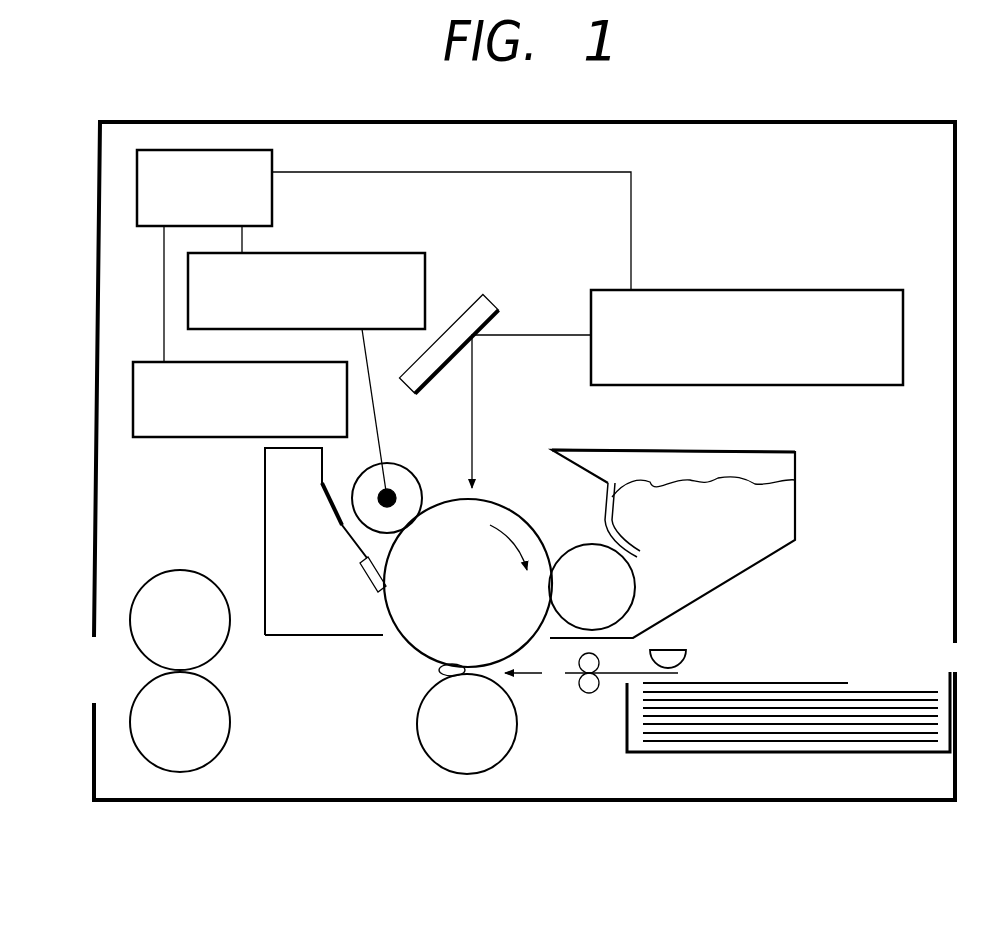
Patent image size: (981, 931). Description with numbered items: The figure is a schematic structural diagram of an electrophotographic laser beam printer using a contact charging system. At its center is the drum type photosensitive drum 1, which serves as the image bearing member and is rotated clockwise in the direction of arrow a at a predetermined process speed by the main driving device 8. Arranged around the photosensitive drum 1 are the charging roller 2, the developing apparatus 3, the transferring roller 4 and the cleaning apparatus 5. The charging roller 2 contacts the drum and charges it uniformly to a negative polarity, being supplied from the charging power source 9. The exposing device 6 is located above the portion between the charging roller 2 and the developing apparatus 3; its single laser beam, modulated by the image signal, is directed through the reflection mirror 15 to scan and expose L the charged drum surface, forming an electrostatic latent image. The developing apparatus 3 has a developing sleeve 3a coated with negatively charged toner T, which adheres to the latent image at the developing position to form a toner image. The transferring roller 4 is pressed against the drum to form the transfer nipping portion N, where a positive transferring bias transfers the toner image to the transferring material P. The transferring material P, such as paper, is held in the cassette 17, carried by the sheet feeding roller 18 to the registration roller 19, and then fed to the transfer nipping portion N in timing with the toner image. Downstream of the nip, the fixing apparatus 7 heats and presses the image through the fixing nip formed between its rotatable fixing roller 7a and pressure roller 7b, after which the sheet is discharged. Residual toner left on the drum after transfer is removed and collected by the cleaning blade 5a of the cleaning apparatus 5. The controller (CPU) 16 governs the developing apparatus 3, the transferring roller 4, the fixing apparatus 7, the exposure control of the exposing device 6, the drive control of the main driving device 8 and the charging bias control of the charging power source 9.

The photosensitive drum 1 is at (468, 552).
The charging roller 2 is at (402, 466).
The developing apparatus 3 is at (698, 517).
The developing sleeve 3a is at (628, 588).
The transferring roller 4 is at (467, 775).
The cleaning apparatus 5 is at (325, 577).
The cleaning blade 5a is at (370, 592).
The exposing device 6 is at (843, 290).
The fixing apparatus 7 is at (205, 691).
The fixing roller 7a is at (180, 570).
The pressure roller 7b is at (180, 772).
The main driving device 8 is at (133, 385).
The charging power source 9 is at (392, 253).
The reflection mirror 15 is at (487, 295).
The controller (CPU) 16 is at (137, 178).
The cassette 17 is at (788, 742).
The sheet feeding roller 18 is at (680, 645).
The registration roller 19 is at (590, 694).
The exposure L is at (472, 388).
The toner T is at (722, 490).
The transfer nipping portion N is at (442, 672).
The transferring material P is at (812, 683).
The arrow a is at (508, 547).